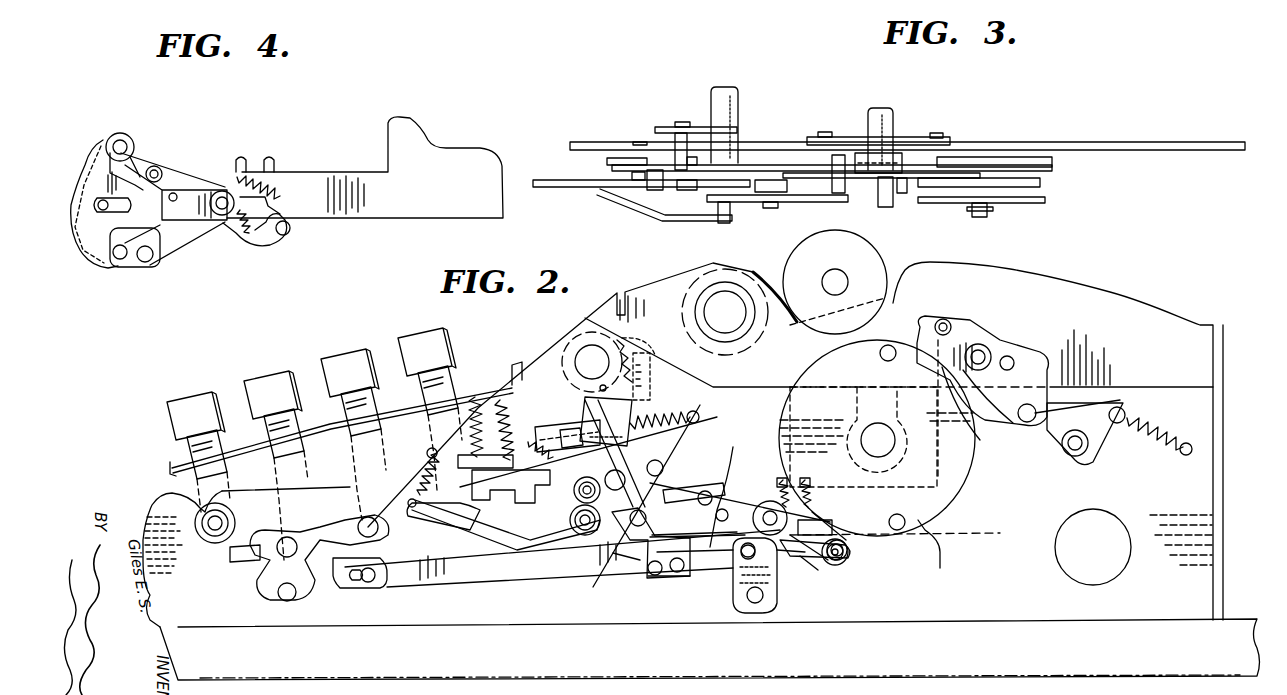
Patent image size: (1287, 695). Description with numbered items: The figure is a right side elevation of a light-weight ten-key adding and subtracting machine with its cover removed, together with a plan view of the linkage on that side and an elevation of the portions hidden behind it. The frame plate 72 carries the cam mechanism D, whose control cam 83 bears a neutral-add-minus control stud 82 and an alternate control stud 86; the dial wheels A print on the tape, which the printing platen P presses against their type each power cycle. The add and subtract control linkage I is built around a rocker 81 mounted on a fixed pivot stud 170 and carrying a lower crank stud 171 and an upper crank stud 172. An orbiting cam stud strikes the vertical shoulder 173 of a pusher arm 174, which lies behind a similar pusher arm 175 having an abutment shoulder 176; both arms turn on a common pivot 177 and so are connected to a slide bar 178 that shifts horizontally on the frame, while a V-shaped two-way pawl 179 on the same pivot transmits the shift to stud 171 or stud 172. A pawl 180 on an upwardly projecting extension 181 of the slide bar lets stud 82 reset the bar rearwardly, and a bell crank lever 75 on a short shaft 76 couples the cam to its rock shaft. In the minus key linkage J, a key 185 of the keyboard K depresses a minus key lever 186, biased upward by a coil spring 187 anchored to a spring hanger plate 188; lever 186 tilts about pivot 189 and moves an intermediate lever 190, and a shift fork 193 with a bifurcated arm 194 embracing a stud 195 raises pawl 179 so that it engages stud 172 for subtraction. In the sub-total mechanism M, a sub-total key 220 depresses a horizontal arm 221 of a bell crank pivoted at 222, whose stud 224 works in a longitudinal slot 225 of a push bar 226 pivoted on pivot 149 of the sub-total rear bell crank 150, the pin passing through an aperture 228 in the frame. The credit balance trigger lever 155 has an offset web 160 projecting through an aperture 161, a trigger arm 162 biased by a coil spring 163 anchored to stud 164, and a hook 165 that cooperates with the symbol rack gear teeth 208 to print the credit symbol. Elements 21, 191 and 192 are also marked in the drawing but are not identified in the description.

In FIG. 2, the frame plate 21 is at (712, 262).
In FIG. 3, the frame plate 72 is at (1104, 150).
In FIG. 2, the frame plate 72 is at (1035, 270).
In FIG. 3, the bell crank lever 75 is at (740, 115).
In FIG. 3, the short shaft 76 is at (742, 160).
In FIG. 4, the rocker 81 is at (150, 265).
In FIG. 3, the rocker 81 is at (662, 127).
In FIG. 2, the rocker 81 is at (668, 580).
In FIG. 3, the neutral-add-minus control stud 82 is at (880, 205).
In FIG. 2, the neutral-add-minus control stud 82 is at (880, 358).
In FIG. 3, the control cam 83 is at (862, 180).
In FIG. 2, the control cam 83 is at (958, 478).
In FIG. 3, the alternate control stud 86 is at (905, 195).
In FIG. 2, the alternate control stud 86 is at (900, 530).
In FIG. 2, the pivot 149 is at (740, 565).
In FIG. 2, the sub-total rear bell crank 150 is at (766, 600).
In FIG. 2, the credit balance trigger lever 155 is at (705, 426).
In FIG. 2, the offset web 160 is at (606, 421).
In FIG. 2, the aperture 161 is at (650, 390).
In FIG. 2, the trigger arm 162 is at (609, 427).
In FIG. 2, the coil spring 163 is at (670, 418).
In FIG. 2, the anchor stud 164 is at (699, 415).
In FIG. 2, the hook 165 is at (648, 355).
In FIG. 2, the fixed pivot stud 170 is at (612, 556).
In FIG. 4, the lower crank stud 171 is at (123, 257).
In FIG. 2, the lower crank stud 171 is at (650, 575).
In FIG. 4, the upper crank stud 172 is at (128, 143).
In FIG. 3, the upper crank stud 172 is at (658, 213).
In FIG. 2, the upper crank stud 172 is at (664, 460).
In FIG. 2, the vertical shoulder 173 is at (832, 562).
In FIG. 2, the pusher arm 174 is at (815, 575).
In FIG. 4, the pusher arm 175 is at (252, 245).
In FIG. 2, the pusher arm 175 is at (823, 512).
In FIG. 4, the abutment shoulder 176 is at (282, 198).
In FIG. 3, the abutment shoulder 176 is at (834, 194).
In FIG. 2, the abutment shoulder 176 is at (832, 527).
In FIG. 4, the common pivot 177 is at (222, 191).
In FIG. 3, the common pivot 177 is at (776, 207).
In FIG. 2, the common pivot 177 is at (770, 501).
In FIG. 4, the slide bar 178 is at (362, 172).
In FIG. 3, the slide bar 178 is at (1035, 172).
In FIG. 2, the slide bar 178 is at (680, 555).
In FIG. 4, the two-way pawl 179 is at (185, 175).
In FIG. 2, the two-way pawl 179 is at (733, 490).
In FIG. 3, the pawl 180 is at (1040, 207).
In FIG. 2, the pawl 180 is at (998, 345).
In FIG. 3, the upwardly projecting extension 181 is at (960, 160).
In FIG. 2, the upwardly projecting extension 181 is at (1020, 362).
In FIG. 2, the minus key 185 is at (440, 335).
In FIG. 2, the minus key lever 186 is at (488, 498).
In FIG. 2, the coil spring 187 is at (495, 410).
In FIG. 2, the spring hanger plate 188 is at (512, 372).
In FIG. 2, the pivot stud 189 is at (572, 522).
In FIG. 2, the intermediate lever 190 is at (522, 490).
In FIG. 2, the spring 191 is at (551, 422).
In FIG. 2, the slide 192 is at (545, 427).
In FIG. 2, the shift fork 193 is at (570, 428).
In FIG. 2, the bifurcated arm 194 is at (685, 487).
In FIG. 2, the stud 195 is at (727, 487).
In FIG. 2, the gear teeth 208 is at (618, 348).
In FIG. 2, the sub-total key 220 is at (273, 375).
In FIG. 2, the horizontal arm 221 is at (330, 520).
In FIG. 2, the pivot 222 is at (370, 517).
In FIG. 2, the stud 224 is at (372, 583).
In FIG. 2, the longitudinal slot 225 is at (350, 585).
In FIG. 2, the push bar 226 is at (455, 585).
In FIG. 2, the aperture 228 is at (783, 560).
In FIG. 2, the dial wheels A is at (760, 270).
In FIG. 2, the printing platen P is at (880, 252).
In FIG. 3, the cam mechanism D is at (912, 166).
In FIG. 2, the cam mechanism D is at (964, 536).
In FIG. 3, the sub-total mechanism M is at (825, 115).
In FIG. 2, the sub-total mechanism M is at (560, 615).
In FIG. 2, the keyboard K is at (210, 368).
In FIG. 2, the minus key linkage J is at (485, 362).
In FIG. 3, the add and subtract control linkage I is at (630, 113).